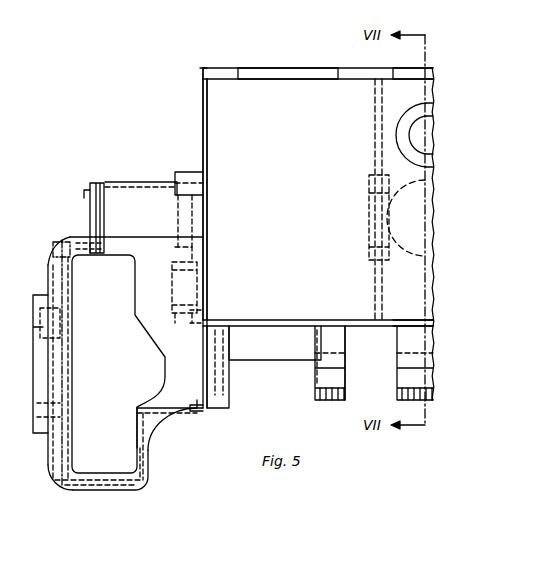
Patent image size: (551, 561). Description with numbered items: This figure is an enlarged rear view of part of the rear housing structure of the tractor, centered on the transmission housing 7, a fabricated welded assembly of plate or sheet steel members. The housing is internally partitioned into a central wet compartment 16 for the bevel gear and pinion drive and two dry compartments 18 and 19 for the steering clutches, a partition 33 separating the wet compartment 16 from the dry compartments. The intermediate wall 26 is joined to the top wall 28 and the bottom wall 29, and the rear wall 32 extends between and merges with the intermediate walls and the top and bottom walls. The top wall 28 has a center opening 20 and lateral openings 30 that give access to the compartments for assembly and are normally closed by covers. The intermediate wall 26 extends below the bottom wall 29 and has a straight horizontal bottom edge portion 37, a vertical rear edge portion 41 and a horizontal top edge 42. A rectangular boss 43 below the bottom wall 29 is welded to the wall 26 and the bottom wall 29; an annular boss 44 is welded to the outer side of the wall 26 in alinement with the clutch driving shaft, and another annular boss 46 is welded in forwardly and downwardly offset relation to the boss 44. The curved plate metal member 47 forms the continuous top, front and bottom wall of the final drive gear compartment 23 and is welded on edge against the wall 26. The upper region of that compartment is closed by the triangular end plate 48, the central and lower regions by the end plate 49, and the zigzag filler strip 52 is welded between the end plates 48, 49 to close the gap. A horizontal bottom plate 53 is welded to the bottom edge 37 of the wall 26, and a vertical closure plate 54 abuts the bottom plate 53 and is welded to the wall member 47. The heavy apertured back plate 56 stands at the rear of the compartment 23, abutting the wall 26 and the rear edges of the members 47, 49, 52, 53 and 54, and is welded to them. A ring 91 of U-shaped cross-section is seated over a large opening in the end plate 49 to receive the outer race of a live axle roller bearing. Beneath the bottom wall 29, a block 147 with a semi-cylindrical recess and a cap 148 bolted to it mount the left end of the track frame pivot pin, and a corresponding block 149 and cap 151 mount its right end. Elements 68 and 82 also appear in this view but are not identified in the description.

The transmission housing 7 is at (306, 201).
The central wet compartment 16 is at (380, 98).
The dry compartment 18 is at (312, 92).
The dry compartment 19 is at (7, 265).
The center opening 20 is at (410, 70).
The final drive gear compartment 23 is at (124, 360).
The intermediate wall 26 is at (203, 106).
The top wall 28 is at (261, 68).
The bottom wall 29 is at (305, 320).
The lateral openings 30 is at (277, 80).
The rear wall 32 is at (9, 168).
The partition 33 is at (372, 127).
The bottom edge portion 37 is at (205, 411).
The rear edge portion 41 is at (12, 95).
The top edge 42 is at (204, 69).
The rectangular boss 43 is at (229, 397).
The annular boss 44 is at (184, 173).
The annular boss 46 is at (182, 323).
The curved plate metal member 47 is at (143, 183).
The triangular end plate 48 is at (98, 184).
The end plate 49 is at (65, 236).
The filler strip 52 is at (80, 242).
The bottom plate 53 is at (193, 413).
The closure plate 54 is at (150, 455).
The back plate 56 is at (50, 465).
The tab 68 is at (90, 190).
The bearing 82 is at (55, 250).
The ring 91 is at (42, 432).
The block 147 is at (345, 347).
The cap 148 is at (314, 380).
The block 149 is at (412, 326).
The cap 151 is at (400, 378).